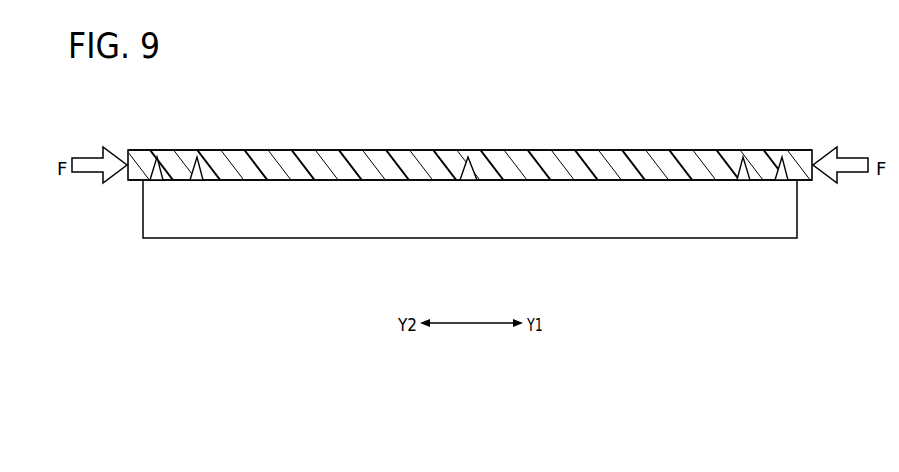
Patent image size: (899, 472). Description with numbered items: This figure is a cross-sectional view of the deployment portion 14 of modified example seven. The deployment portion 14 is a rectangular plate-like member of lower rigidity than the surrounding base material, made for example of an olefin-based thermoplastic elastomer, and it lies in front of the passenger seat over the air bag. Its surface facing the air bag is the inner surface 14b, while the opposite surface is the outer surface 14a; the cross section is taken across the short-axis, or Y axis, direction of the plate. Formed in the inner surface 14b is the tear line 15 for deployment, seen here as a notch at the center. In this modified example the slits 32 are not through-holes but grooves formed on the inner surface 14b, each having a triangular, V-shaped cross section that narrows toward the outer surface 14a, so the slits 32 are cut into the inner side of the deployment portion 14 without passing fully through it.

The deployment portion 14 is at (678, 144).
The outer surface 14a is at (540, 150).
The inner surface 14b is at (638, 180).
The tear line 15 is at (472, 180).
The slits 32 is at (198, 180).